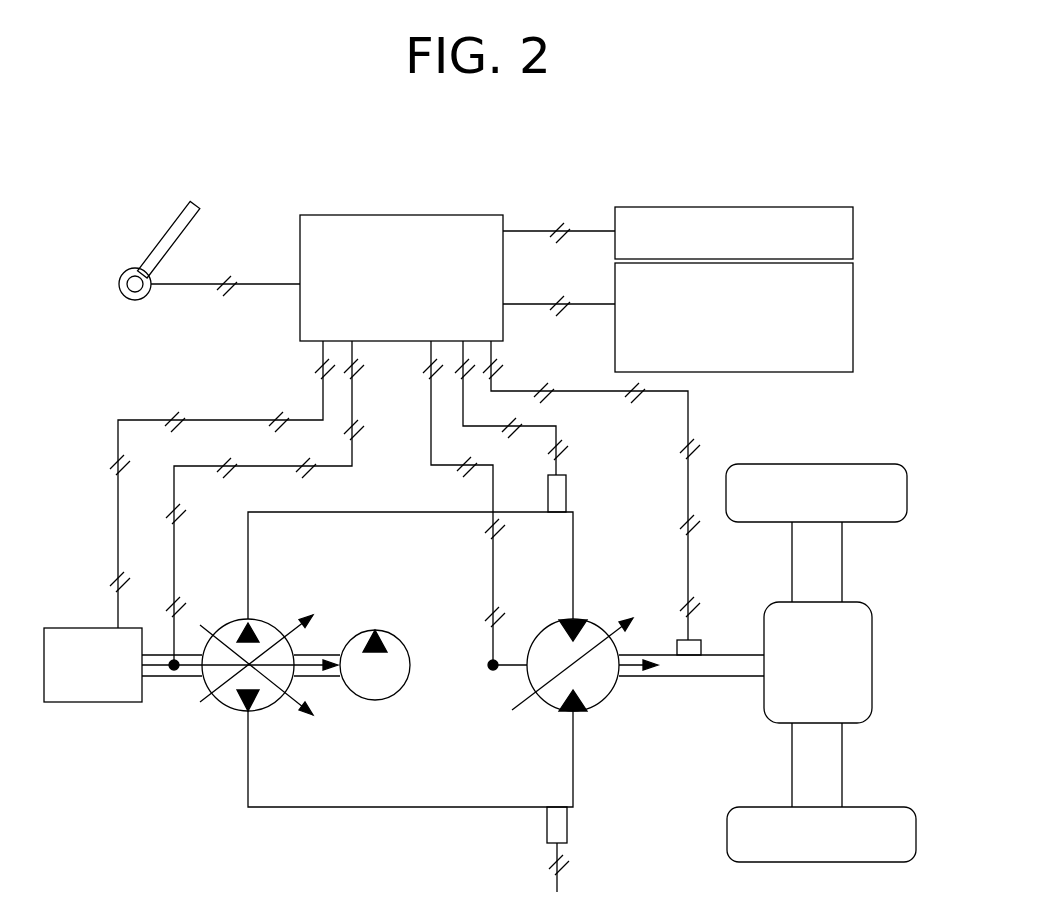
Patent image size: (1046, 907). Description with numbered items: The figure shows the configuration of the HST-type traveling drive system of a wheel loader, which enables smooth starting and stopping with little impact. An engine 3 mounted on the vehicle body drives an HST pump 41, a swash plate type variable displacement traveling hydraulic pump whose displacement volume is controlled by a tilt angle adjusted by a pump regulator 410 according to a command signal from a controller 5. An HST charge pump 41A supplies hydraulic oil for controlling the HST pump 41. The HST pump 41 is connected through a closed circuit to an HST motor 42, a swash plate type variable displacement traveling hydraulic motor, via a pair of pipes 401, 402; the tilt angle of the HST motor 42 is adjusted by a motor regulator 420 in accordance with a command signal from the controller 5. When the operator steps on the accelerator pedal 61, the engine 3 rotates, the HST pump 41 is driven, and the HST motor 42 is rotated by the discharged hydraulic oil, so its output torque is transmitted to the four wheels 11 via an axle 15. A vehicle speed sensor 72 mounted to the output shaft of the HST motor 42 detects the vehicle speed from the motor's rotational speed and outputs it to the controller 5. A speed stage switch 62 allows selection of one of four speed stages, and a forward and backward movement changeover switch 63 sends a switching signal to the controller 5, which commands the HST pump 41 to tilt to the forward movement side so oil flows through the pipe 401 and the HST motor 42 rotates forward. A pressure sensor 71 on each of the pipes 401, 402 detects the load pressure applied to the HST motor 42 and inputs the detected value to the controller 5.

The engine 3 is at (75, 702).
The controller 5 is at (490, 215).
The wheels 11 is at (840, 464).
The axle 15 is at (858, 677).
The HST pump 41 is at (272, 712).
The HST charge pump 41A is at (377, 700).
The HST motor 42 is at (598, 705).
The accelerator pedal 61 is at (165, 233).
The speed stage switch 62 is at (853, 210).
The forward and backward movement changeover switch 63 is at (853, 272).
The pressure sensor 71 is at (566, 485).
The vehicle speed sensor 72 is at (701, 645).
The pipe 401 is at (340, 512).
The pipe 402 is at (360, 807).
The pump regulator 410 is at (174, 670).
The motor regulator 420 is at (492, 672).